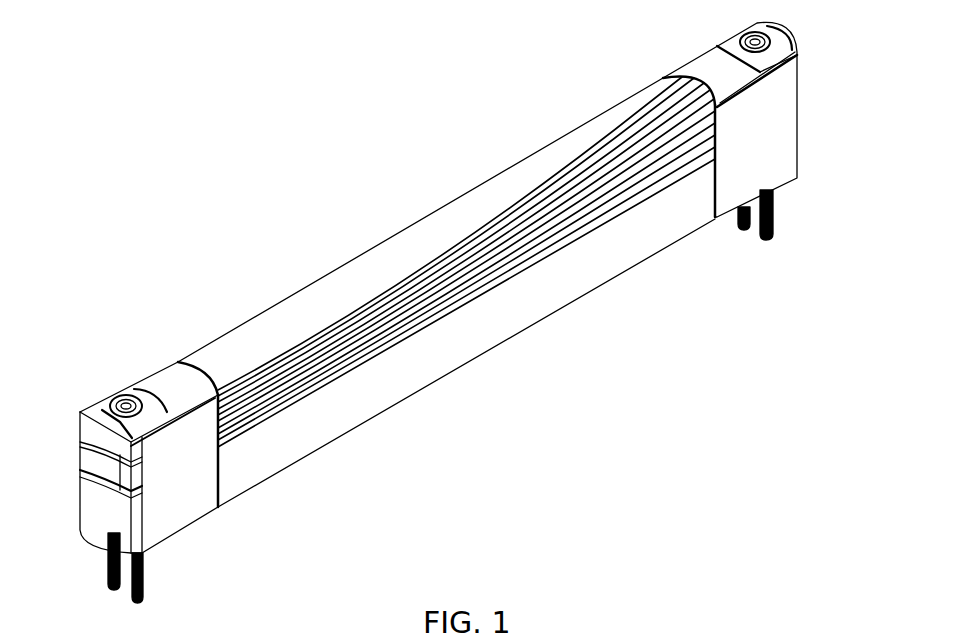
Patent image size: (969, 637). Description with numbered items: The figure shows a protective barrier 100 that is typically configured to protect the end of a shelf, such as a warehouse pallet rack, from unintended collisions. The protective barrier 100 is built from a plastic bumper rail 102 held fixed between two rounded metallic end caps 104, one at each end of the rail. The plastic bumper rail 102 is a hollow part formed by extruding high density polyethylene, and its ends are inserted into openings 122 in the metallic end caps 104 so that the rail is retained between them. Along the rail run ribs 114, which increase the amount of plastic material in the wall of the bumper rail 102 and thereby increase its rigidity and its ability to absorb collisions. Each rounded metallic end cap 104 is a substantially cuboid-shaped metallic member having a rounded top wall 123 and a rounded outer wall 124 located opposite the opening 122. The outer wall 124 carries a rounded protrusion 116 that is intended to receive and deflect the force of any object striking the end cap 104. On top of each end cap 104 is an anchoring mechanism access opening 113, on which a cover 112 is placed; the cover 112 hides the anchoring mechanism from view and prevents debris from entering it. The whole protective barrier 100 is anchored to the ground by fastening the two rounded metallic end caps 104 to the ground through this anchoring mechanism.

The protective barrier 100 is at (457, 306).
The plastic bumper rail 102 is at (432, 357).
The rounded metallic end caps 104 is at (197, 528).
The cover 112 is at (105, 408).
The anchoring mechanism access opening 113 is at (127, 394).
The ribs 114 is at (493, 298).
The rounded protrusion 116 is at (92, 470).
The openings 122 is at (220, 472).
The rounded top wall 123 is at (155, 383).
The rounded outer wall 124 is at (93, 527).